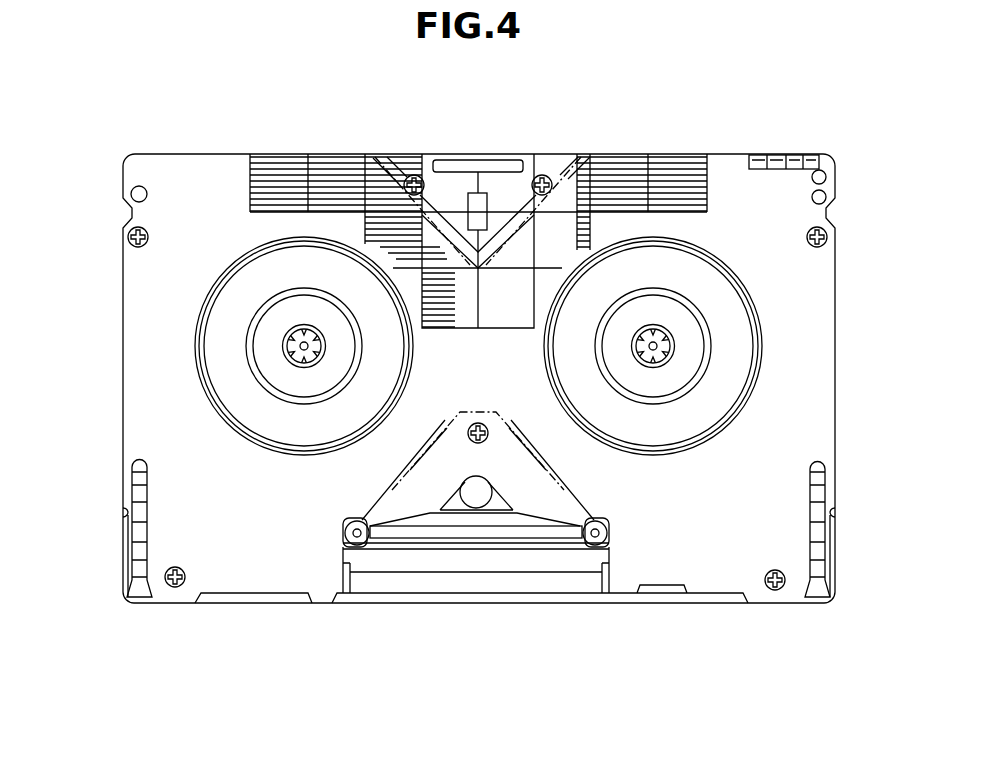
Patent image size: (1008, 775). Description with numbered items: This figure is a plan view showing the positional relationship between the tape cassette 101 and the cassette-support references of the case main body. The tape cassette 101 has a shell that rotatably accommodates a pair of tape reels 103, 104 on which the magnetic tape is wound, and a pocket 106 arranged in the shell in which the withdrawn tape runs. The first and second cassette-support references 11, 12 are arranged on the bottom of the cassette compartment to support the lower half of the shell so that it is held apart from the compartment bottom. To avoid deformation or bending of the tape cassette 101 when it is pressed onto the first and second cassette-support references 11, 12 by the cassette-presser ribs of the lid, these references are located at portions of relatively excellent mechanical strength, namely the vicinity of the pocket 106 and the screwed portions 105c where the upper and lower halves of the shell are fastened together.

The tape cassette 101 is at (113, 294).
The tape reel 103 is at (213, 363).
The tape reel 104 is at (743, 370).
The first cassette-support reference 11 is at (448, 225).
The screws 105c is at (412, 175).
The second cassette-support reference 12 is at (418, 473).
The pocket 106 is at (475, 583).